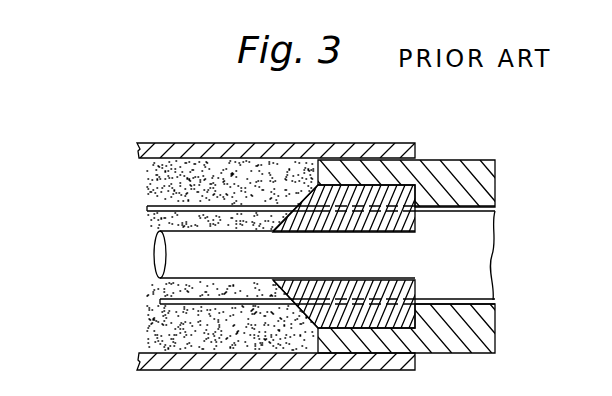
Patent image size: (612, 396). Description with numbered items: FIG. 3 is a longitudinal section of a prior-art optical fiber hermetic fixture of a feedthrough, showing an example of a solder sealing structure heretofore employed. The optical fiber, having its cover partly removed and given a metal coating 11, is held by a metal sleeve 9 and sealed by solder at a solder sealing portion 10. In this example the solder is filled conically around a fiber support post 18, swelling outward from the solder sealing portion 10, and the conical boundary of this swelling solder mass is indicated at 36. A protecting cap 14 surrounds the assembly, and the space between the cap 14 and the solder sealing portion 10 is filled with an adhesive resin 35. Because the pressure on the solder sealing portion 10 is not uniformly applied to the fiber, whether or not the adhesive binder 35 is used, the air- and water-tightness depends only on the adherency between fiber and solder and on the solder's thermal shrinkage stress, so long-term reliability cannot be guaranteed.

The metal sleeve 9 is at (460, 167).
The solder sealing portion 10 is at (343, 192).
The metal coating 11 is at (150, 208).
The protecting cap 14 is at (170, 143).
The fiber support post 18 is at (170, 257).
The adhesive resin 35 is at (170, 180).
The boundary 36 is at (298, 210).